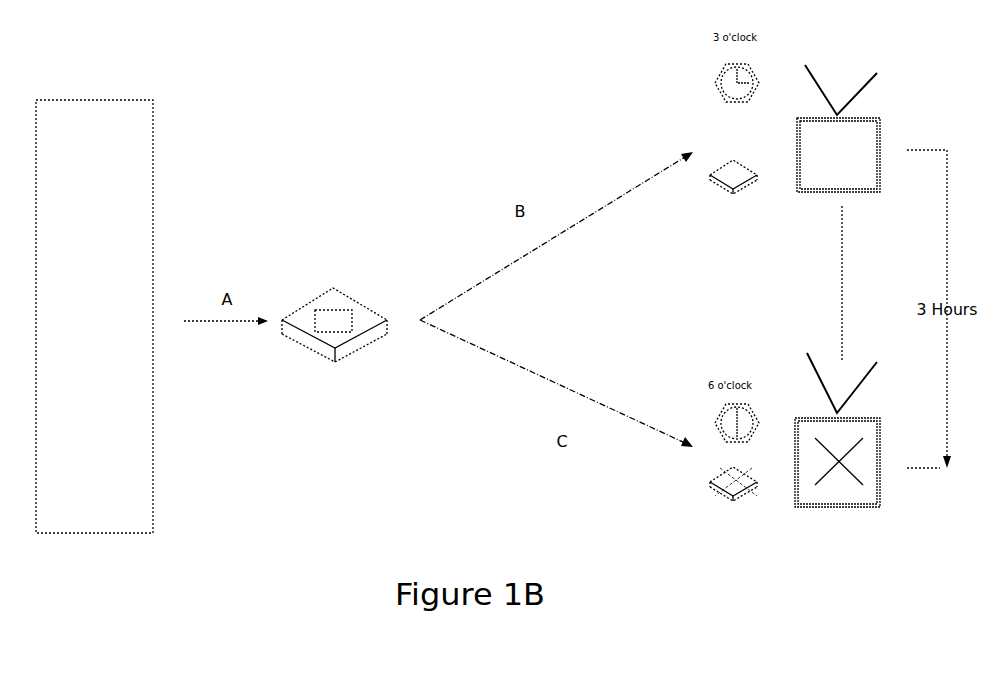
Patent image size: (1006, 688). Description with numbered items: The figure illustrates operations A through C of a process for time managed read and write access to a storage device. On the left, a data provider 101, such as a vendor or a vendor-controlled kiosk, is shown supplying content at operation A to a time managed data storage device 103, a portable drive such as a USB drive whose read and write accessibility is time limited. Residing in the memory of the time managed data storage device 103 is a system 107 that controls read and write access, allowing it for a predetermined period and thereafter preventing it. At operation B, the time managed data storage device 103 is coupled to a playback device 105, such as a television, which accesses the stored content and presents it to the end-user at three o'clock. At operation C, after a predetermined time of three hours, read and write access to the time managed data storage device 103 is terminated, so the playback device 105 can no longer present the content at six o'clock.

The data provider 101 is at (120, 171).
The time managed data storage device 103 is at (332, 302).
The playback device 105 is at (875, 128).
The system 107 is at (324, 327).